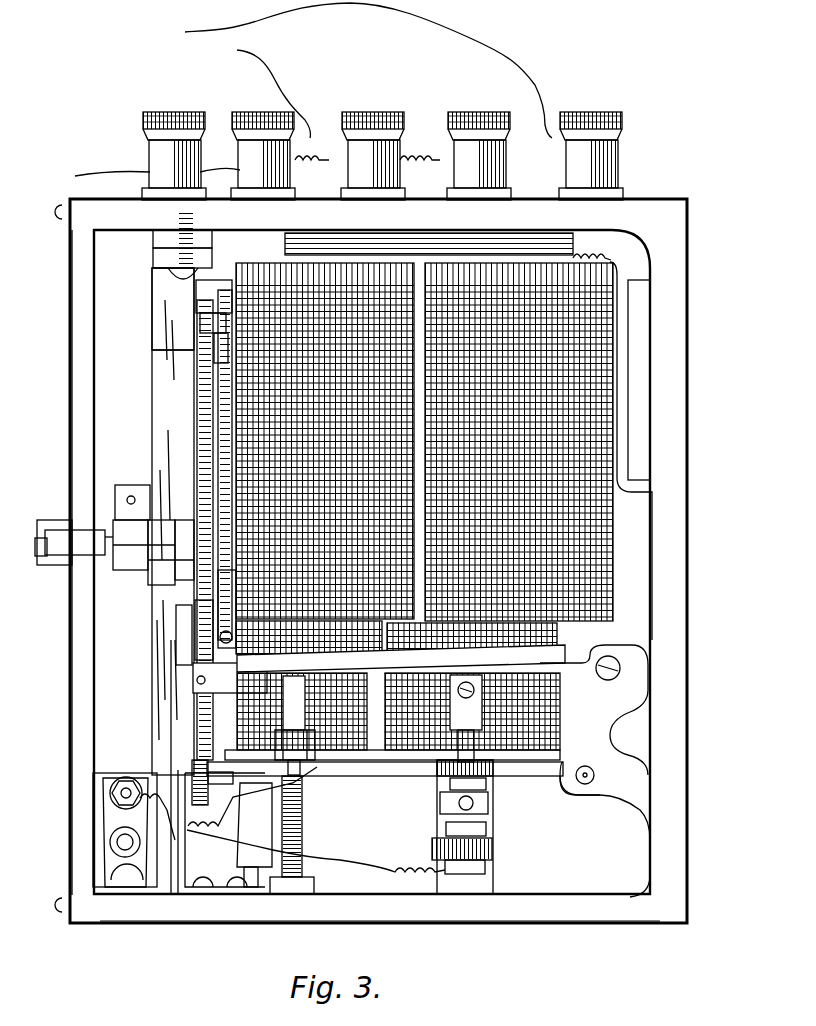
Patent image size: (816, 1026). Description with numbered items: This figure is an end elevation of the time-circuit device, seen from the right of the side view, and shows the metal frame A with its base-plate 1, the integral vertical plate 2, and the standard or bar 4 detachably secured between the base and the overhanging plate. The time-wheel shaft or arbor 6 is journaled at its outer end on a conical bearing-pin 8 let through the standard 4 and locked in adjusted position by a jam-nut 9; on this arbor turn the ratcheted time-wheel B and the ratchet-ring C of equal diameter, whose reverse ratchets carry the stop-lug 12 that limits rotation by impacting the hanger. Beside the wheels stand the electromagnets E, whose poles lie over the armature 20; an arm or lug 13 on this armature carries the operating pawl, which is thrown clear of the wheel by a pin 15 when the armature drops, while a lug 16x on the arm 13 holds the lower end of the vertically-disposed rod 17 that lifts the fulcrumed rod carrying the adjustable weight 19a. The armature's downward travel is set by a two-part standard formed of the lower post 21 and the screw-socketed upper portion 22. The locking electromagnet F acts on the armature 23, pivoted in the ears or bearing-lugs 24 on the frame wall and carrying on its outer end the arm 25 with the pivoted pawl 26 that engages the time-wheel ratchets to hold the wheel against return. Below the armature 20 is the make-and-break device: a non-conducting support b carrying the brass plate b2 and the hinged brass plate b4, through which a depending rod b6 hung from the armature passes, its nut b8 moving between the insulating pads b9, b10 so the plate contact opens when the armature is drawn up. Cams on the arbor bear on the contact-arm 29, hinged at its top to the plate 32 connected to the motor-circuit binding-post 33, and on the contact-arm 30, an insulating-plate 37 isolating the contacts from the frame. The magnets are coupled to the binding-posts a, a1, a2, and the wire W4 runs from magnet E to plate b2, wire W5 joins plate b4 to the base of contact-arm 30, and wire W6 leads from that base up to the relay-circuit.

The base-plate 1 is at (460, 918).
The vertical plate 2 is at (683, 722).
The standard or bar 4 is at (70, 400).
The time-wheel shaft or arbor 6 is at (113, 528).
The conical bearing-pin 8 is at (48, 528).
The jam-nut 9 is at (54, 565).
The stop-lug 12 is at (230, 678).
The extension, arm, or lug of the armature 13 is at (198, 645).
The pin 15 is at (188, 627).
The lug on the arm 16x is at (232, 637).
The vertically-disposed rod 17 is at (225, 492).
The weight 19a is at (214, 321).
The armature 20 is at (401, 658).
The lower post 21 is at (296, 824).
The upper portion of standard 22 is at (295, 725).
The armature 23 is at (374, 778).
The ears or bearing-lugs 24 is at (592, 778).
The arm 25 is at (208, 780).
The pawl 26 is at (210, 762).
The contact-arm 29 is at (152, 408).
The contact-arm 30 is at (141, 670).
The plate 32 is at (160, 262).
The binding-post 33 is at (158, 150).
The insulating-plate 37 is at (185, 242).
The binding-post a is at (590, 112).
The binding-post a1 is at (485, 100).
The binding-post a2 is at (373, 140).
The metal frame A is at (572, 858).
The time-wheel B is at (200, 356).
The ratchet-wheel or ring C is at (220, 406).
The electromagnets E is at (560, 396).
The electromagnet F is at (530, 712).
The wire W4 is at (630, 566).
The wire W5 is at (316, 851).
The wire W6 is at (228, 814).
The non-conducting support b is at (494, 828).
The brass plate b2 is at (490, 852).
The brass plate b4 is at (488, 770).
The depending rod b6 is at (466, 718).
The nut b8 is at (442, 802).
The insulating pad or block b9 is at (452, 782).
The insulating pad or block b10 is at (448, 828).